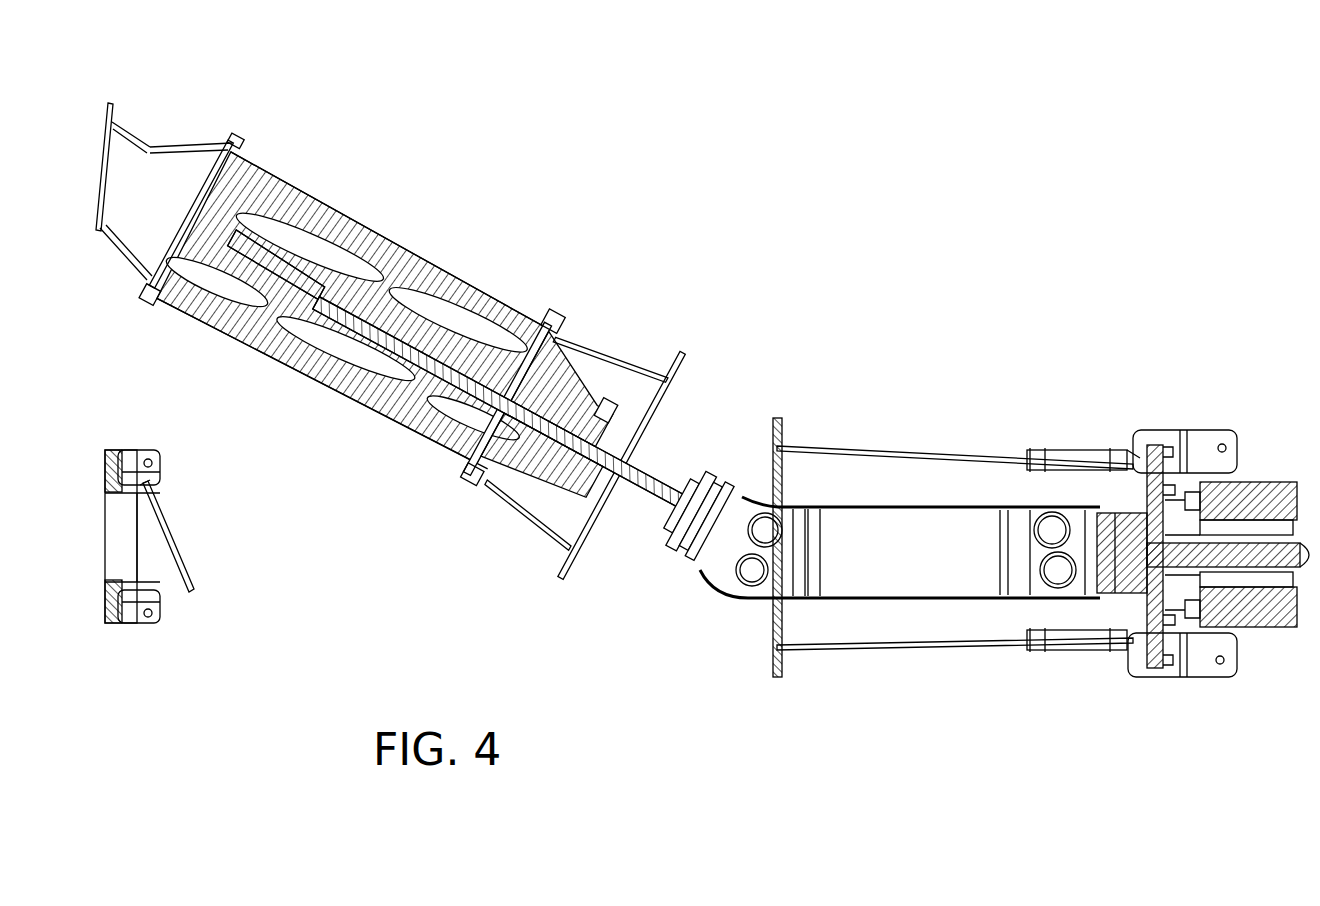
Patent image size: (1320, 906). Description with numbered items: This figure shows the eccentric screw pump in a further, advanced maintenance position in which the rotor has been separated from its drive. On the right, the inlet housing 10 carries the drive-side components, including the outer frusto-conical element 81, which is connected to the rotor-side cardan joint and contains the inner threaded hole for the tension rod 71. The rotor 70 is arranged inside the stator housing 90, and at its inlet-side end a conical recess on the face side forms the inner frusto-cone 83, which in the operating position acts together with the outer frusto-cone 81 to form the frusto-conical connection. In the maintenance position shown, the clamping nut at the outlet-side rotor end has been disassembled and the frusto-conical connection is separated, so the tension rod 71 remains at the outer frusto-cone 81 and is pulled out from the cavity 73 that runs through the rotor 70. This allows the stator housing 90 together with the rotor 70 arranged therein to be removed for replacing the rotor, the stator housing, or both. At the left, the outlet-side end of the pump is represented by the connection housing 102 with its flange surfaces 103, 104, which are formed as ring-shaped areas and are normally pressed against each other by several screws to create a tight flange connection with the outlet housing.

The inlet housing 10 is at (899, 447).
The rotor 70 is at (362, 290).
The tension rod 71 is at (660, 493).
The cavity 73 is at (305, 290).
The outer frusto-conical element 81 is at (717, 483).
The inner frusto-cone 83 is at (592, 482).
The stator housing 90 is at (512, 318).
The connection housing 102 is at (145, 565).
The flange surface 103 is at (102, 160).
The flange surface 104 is at (170, 530).